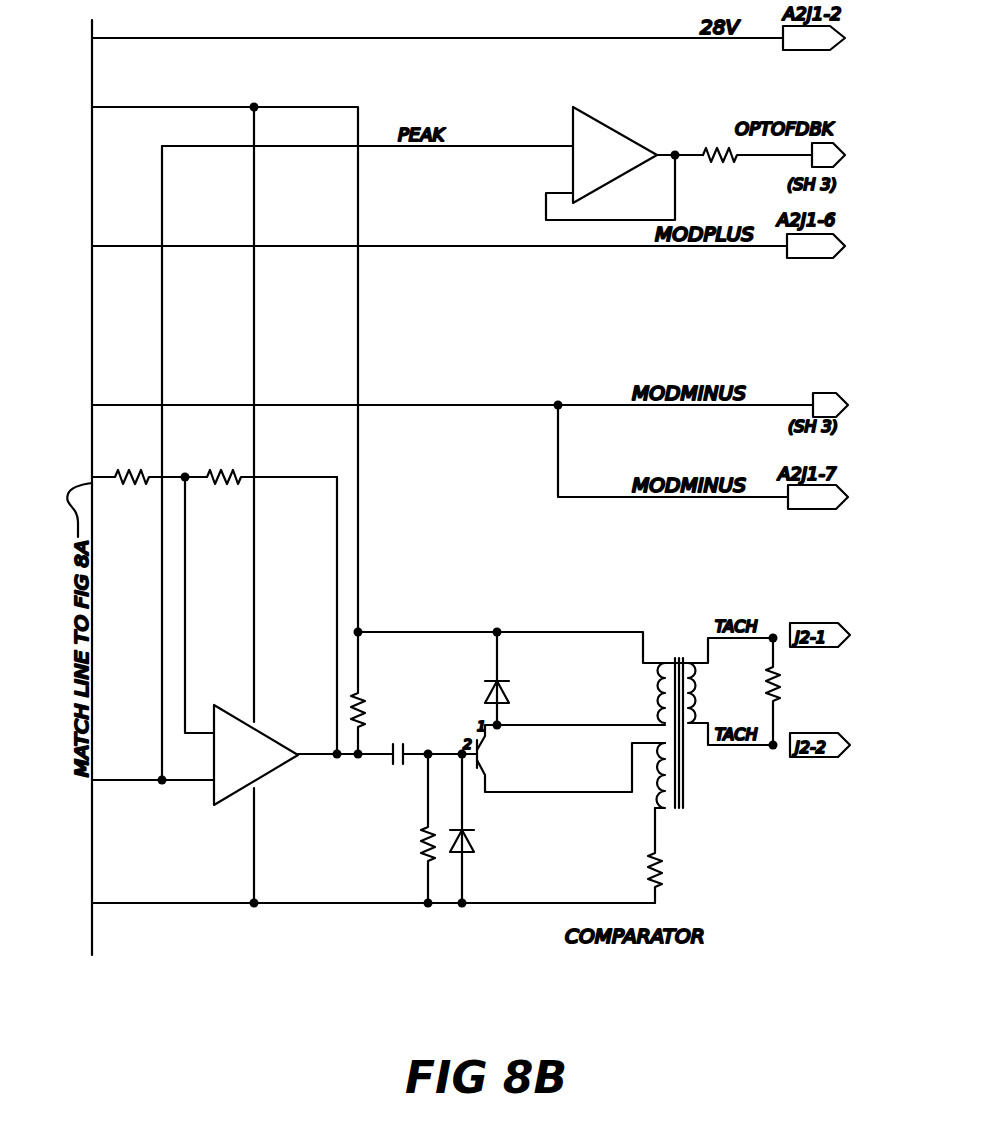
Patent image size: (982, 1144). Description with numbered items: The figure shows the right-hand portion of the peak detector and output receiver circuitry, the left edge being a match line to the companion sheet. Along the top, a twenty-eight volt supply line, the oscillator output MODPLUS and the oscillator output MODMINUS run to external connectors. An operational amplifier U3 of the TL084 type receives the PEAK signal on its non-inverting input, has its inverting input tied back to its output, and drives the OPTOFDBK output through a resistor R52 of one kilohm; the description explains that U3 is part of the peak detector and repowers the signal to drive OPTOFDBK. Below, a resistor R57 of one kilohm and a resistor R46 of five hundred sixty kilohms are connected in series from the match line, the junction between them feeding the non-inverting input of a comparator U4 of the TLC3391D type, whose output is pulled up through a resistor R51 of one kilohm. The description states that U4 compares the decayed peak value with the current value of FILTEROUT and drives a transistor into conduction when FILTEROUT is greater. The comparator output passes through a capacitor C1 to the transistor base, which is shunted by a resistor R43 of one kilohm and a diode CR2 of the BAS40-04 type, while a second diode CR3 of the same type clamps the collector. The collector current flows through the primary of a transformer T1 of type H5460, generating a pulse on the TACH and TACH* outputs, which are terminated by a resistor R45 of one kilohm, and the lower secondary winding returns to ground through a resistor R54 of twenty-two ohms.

The operational amplifier U3 is at (624, 163).
The resistor 1K R52 is at (754, 132).
The resistor 1K R57 is at (138, 450).
The resistor 560K R46 is at (261, 450).
The comparator U4 is at (269, 763).
The resistor 1K R51 is at (383, 693).
The capacitor 0.01uF 50V C1 is at (416, 736).
The resistor 1K R43 is at (406, 828).
The diode BAS40-04 CR2 is at (504, 828).
The diode BAS40-04 CR3 is at (538, 678).
The transformer T1 is at (565, 711).
The resistor 1K R45 is at (791, 691).
The resistor 22 ohm R54 is at (675, 855).